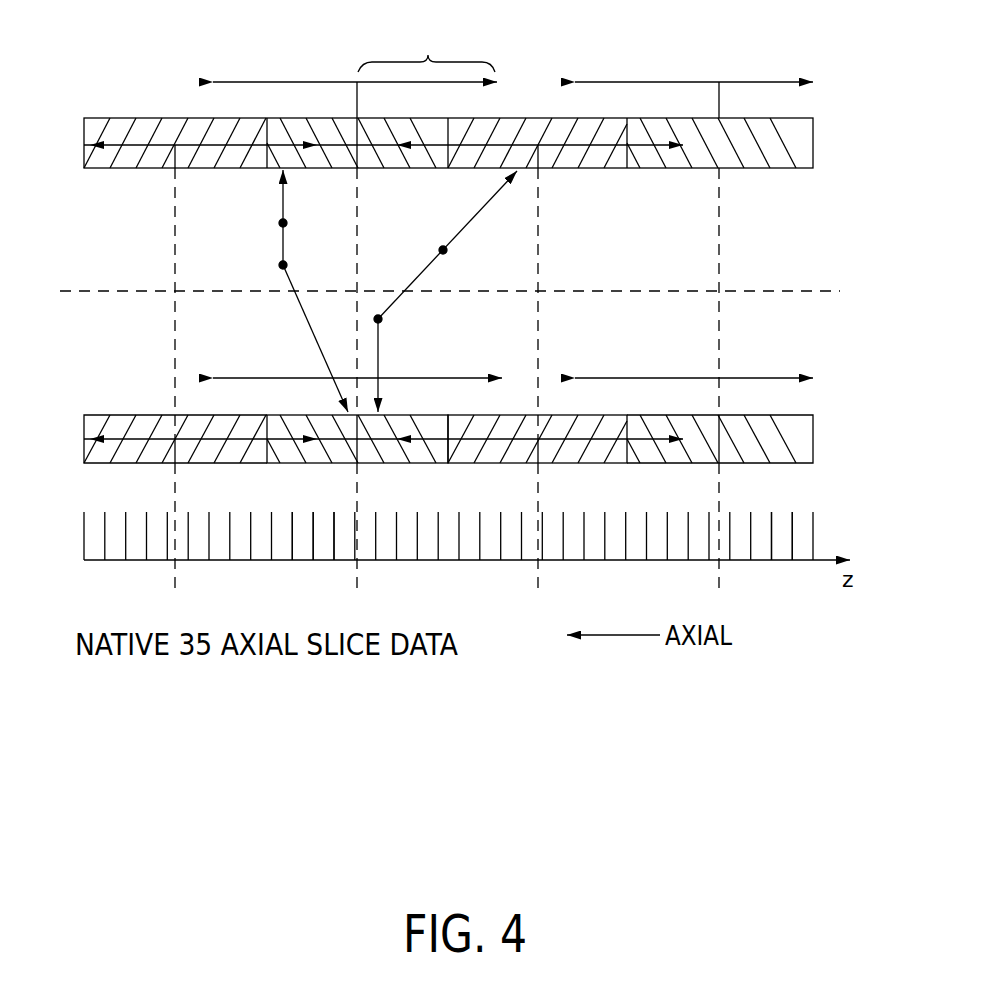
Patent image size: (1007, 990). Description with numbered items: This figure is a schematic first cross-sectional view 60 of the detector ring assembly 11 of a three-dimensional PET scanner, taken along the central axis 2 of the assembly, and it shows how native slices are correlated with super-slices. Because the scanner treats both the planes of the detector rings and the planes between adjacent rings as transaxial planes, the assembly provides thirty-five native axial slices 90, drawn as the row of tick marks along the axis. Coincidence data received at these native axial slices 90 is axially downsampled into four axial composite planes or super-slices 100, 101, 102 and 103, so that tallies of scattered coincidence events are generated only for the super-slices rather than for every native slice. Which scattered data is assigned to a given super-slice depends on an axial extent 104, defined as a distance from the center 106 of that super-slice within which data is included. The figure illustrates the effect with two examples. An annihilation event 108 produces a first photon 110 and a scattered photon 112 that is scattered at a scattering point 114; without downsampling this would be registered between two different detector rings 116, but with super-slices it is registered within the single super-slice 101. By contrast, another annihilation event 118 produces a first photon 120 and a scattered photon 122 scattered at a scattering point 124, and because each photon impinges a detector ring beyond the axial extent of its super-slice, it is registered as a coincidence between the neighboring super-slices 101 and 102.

The detector ring assembly 11 is at (122, 112).
The first cross-sectional view 60 is at (718, 42).
The center of super-slice 106 is at (356, 78).
The axial extent 104 is at (355, 53).
The first photon 110 is at (280, 172).
The annihilation event 108 is at (283, 223).
The scattering point 114 is at (283, 265).
The scattered photon 112 is at (348, 412).
The first photon 120 is at (520, 172).
The annihilation event 118 is at (443, 250).
The central axis 2 is at (821, 290).
The scattering point 124 is at (378, 319).
The scattered photon 122 is at (383, 412).
The super-slice 100 is at (203, 468).
The super-slice 101 is at (395, 468).
The super-slice 102 is at (578, 468).
The super-slice 103 is at (785, 468).
The detector rings 116 is at (277, 562).
The native axial slices 90 is at (759, 562).